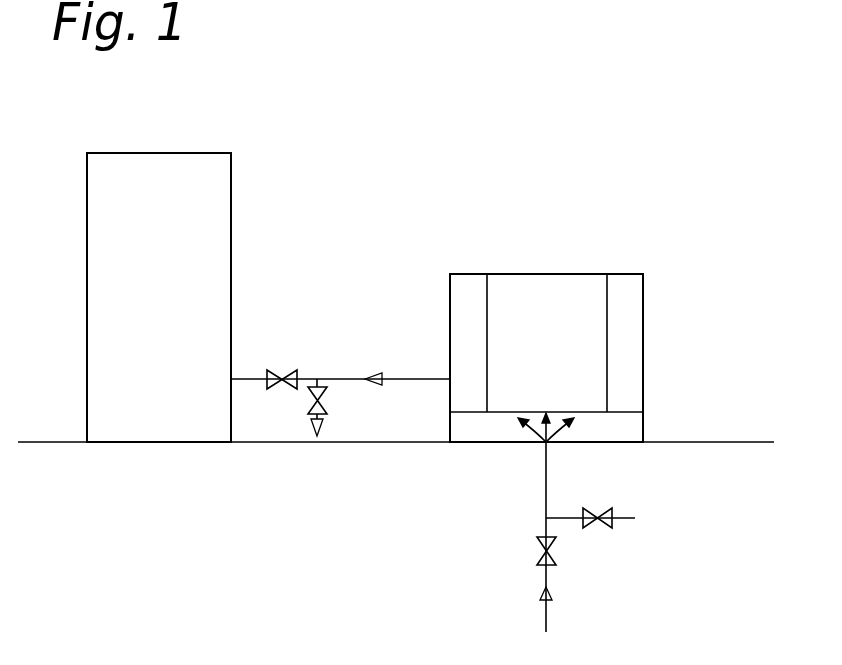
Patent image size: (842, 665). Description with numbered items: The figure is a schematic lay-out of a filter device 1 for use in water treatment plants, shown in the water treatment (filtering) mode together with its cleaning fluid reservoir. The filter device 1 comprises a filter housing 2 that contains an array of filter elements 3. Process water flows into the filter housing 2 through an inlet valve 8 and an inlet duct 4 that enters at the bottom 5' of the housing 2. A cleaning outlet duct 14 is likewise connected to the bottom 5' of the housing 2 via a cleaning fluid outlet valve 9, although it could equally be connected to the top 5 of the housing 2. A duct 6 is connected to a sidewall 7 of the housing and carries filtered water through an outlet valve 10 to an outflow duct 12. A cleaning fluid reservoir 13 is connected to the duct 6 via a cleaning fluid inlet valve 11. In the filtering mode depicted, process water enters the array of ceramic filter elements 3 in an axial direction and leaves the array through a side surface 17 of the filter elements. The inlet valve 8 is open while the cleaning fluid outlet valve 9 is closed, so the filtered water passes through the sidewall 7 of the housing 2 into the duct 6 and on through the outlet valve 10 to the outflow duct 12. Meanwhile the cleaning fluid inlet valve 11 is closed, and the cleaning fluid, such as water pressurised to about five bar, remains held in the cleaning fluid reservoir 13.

The filter device 1 is at (373, 230).
The filter housing 2 is at (637, 357).
The filter elements 3 is at (583, 412).
The inlet duct 4 is at (545, 493).
The top 5 is at (546, 253).
The bottom 5' is at (561, 448).
The duct 6 is at (345, 379).
The sidewall 7 is at (450, 403).
The inlet valve 8 is at (537, 558).
The cleaning fluid outlet valve 9 is at (606, 523).
The outlet valve 10 is at (315, 401).
The cleaning fluid inlet valve 11 is at (272, 370).
The outflow duct 12 is at (320, 416).
The cleaning fluid reservoir 13 is at (95, 296).
The cleaning outlet duct 14 is at (635, 519).
The side surface 17 is at (485, 393).